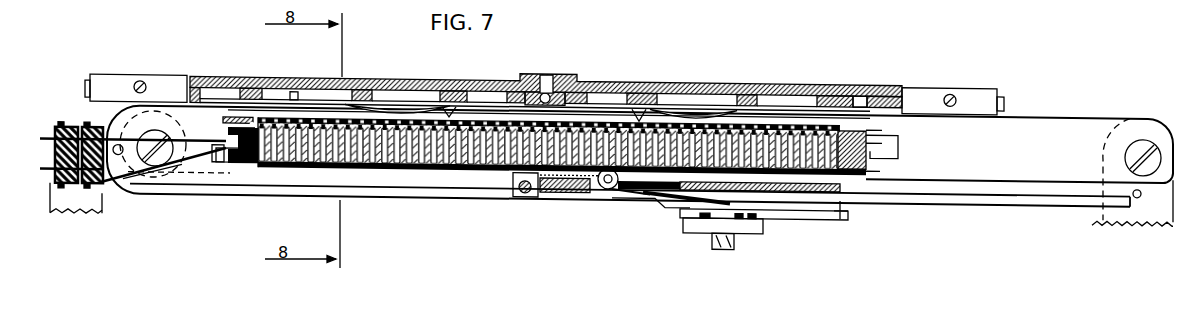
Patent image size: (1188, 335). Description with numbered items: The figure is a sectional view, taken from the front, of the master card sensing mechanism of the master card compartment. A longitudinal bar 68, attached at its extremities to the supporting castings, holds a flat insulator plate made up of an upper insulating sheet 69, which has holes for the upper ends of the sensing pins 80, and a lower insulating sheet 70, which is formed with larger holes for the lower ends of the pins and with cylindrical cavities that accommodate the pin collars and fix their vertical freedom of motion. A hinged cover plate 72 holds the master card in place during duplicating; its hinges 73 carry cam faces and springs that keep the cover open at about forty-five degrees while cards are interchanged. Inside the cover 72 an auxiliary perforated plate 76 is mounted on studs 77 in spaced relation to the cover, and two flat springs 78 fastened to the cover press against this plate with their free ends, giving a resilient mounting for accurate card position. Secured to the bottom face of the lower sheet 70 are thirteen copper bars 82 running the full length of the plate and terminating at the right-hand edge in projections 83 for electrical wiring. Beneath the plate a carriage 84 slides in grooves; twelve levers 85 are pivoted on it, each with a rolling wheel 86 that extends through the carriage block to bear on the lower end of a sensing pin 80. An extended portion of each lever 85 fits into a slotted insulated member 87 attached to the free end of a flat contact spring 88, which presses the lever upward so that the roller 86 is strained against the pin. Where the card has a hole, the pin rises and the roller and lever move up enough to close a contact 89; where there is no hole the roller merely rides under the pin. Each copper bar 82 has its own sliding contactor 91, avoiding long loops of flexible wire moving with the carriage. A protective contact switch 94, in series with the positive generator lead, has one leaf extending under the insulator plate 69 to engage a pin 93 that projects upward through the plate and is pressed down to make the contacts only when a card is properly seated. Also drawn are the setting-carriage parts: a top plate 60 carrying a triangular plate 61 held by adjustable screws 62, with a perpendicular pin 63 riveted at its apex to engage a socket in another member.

The top plate 60 is at (680, 221).
The triangular plate 61 is at (792, 208).
The adjustable screws 62 is at (768, 209).
The perpendicular pin 63 is at (843, 202).
The longitudinal bar 68 is at (972, 160).
The upper insulating sheet 69 is at (882, 119).
The lower insulating sheet 70 is at (882, 133).
The hinged cover plate 72 is at (697, 76).
The hinges 73 is at (173, 73).
The auxiliary perforated plate 76 is at (783, 113).
The studs 77 is at (285, 95).
The flat springs 78 is at (372, 112).
The sensing pins 80 is at (305, 170).
The copper bars 82 is at (214, 162).
The projections 83 is at (900, 143).
The carriage 84 is at (567, 189).
The levers 85 is at (546, 192).
The rolling wheel 86 is at (608, 181).
The slotted insulated member 87 is at (668, 199).
The flat contact spring 88 is at (773, 190).
The contact 89 is at (647, 216).
The sliding contactor 91 is at (640, 187).
The pin 93 is at (224, 131).
The contact switch 94 is at (186, 166).